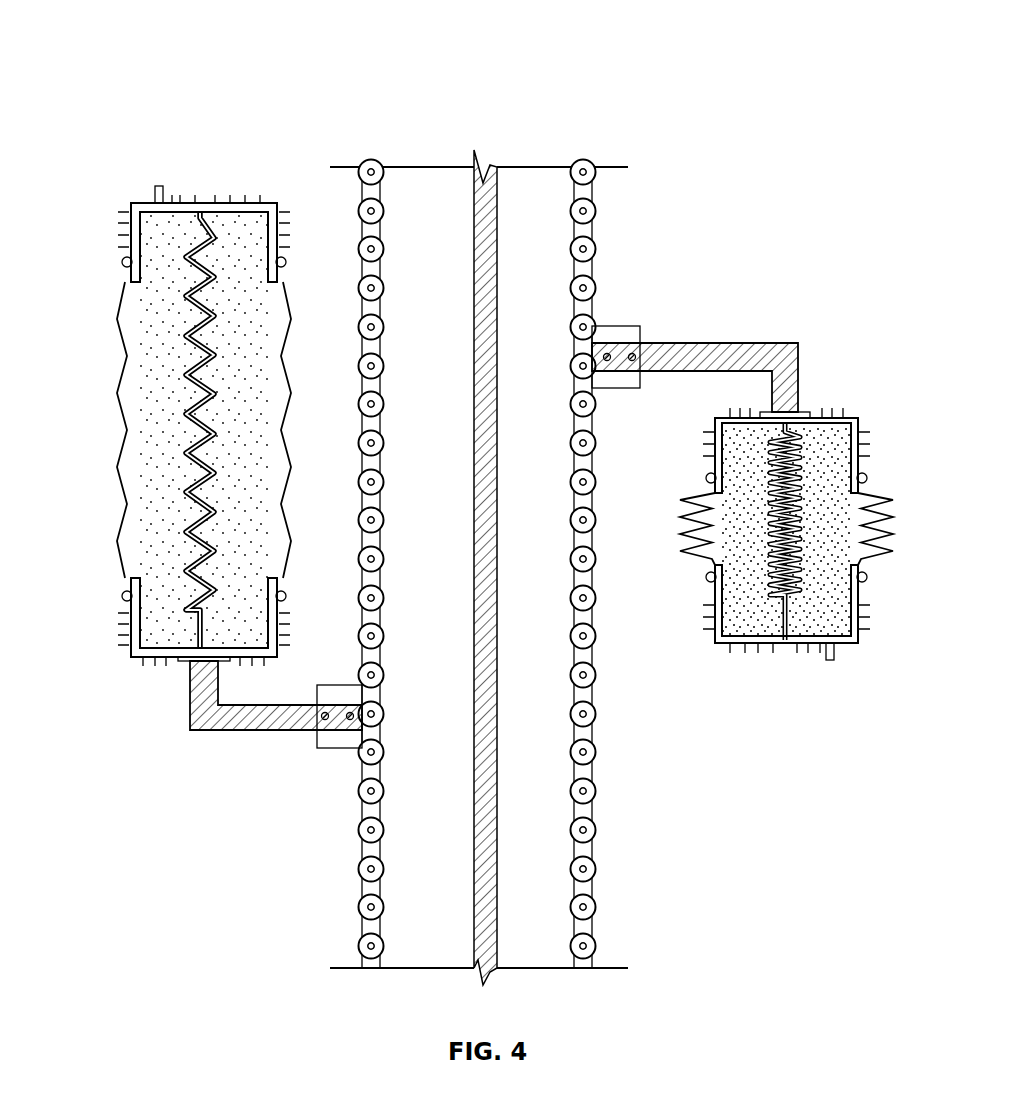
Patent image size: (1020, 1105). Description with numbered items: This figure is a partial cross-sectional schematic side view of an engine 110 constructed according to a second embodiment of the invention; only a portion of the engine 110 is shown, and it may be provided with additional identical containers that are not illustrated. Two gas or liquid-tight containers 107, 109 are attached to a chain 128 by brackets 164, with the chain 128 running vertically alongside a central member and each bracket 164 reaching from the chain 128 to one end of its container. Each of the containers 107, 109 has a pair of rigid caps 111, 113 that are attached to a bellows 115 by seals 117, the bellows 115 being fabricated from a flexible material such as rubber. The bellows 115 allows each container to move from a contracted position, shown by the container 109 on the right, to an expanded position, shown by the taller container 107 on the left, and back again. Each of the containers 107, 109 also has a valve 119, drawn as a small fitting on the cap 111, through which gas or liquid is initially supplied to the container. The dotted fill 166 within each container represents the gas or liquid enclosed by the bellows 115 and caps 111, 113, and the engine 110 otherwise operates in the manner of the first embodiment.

The container 107 is at (239, 133).
The container 109 is at (840, 340).
The engine 110 is at (736, 70).
The rigid cap 111 is at (274, 204).
The rigid cap 113 is at (270, 657).
The bellows 115 is at (287, 502).
The seal 117 is at (123, 265).
The valve 119 is at (158, 186).
The chain 128 is at (384, 336).
The bracket 164 is at (276, 732).
The filler material 166 is at (270, 565).